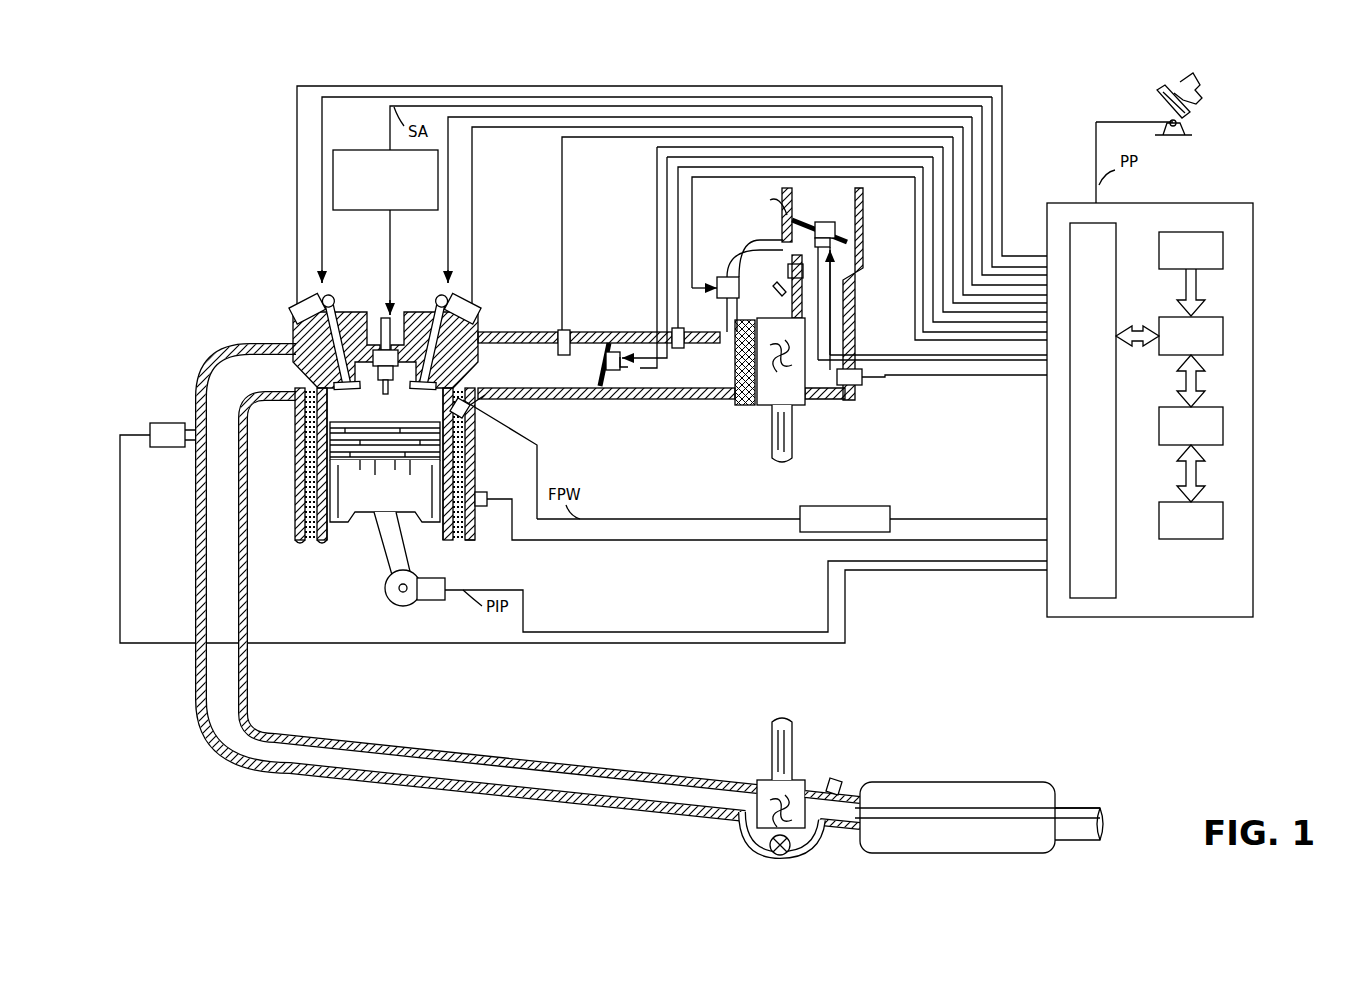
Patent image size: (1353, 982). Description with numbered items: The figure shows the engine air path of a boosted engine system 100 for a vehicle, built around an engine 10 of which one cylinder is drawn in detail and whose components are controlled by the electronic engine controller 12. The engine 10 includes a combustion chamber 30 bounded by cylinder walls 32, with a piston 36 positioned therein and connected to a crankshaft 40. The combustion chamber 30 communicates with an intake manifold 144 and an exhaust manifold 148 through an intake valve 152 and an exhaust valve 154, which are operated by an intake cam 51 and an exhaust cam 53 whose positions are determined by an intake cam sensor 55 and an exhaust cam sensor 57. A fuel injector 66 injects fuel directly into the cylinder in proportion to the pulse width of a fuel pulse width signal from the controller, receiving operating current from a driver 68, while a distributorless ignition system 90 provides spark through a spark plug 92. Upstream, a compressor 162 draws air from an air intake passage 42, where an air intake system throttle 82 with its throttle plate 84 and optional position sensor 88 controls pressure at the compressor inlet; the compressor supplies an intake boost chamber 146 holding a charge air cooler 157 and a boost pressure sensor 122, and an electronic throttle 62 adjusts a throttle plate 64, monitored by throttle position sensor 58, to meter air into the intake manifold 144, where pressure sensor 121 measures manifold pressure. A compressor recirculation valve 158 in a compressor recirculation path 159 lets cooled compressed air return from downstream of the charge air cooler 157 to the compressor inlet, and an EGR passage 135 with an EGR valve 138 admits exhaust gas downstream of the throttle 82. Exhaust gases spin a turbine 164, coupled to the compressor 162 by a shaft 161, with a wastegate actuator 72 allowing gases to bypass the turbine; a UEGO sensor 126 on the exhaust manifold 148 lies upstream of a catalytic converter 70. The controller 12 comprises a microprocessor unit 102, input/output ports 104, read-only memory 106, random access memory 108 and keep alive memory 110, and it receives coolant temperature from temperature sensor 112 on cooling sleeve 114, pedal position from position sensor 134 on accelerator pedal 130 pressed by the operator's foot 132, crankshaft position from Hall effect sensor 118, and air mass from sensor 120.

The engine system 100 is at (160, 118).
The engine 10 is at (594, 525).
The electronic engine controller 12 is at (1187, 395).
The combustion chamber 30 is at (383, 405).
The cylinder walls 32 is at (337, 528).
The piston 36 is at (367, 497).
The crankshaft 40 is at (393, 606).
The air intake passage 42 is at (789, 293).
The intake cam 51 is at (450, 317).
The exhaust cam 53 is at (308, 317).
The intake cam sensor 55 is at (460, 298).
The exhaust cam sensor 57 is at (312, 300).
The throttle position sensor 58 is at (625, 365).
The electronic throttle 62 is at (600, 348).
The throttle plate 64 is at (612, 352).
The fuel injector 66 is at (467, 412).
The driver 68 is at (890, 520).
The catalytic converter 70 is at (865, 845).
The wastegate actuator 72 is at (768, 848).
The air intake system throttle 82 is at (800, 236).
The throttle plate 84 is at (787, 212).
The position sensor 88 is at (815, 237).
The distributorless ignition system 90 is at (339, 150).
The spark plug 92 is at (390, 318).
The microprocessor unit 102 is at (1223, 340).
The input/output ports 104 is at (1116, 232).
The read-only memory 106 is at (1223, 250).
The random access memory 108 is at (1223, 427).
The keep alive memory 110 is at (1223, 522).
The temperature sensor 112 is at (481, 492).
The cooling sleeve 114 is at (472, 528).
The Hall effect sensor 118 is at (428, 600).
The air mass sensor 120 is at (852, 385).
The pressure sensor 121 is at (560, 332).
The pressure sensor 122 is at (684, 330).
The Universal Exhaust Gas Oxygen sensor 126 is at (150, 428).
The accelerator pedal 130 is at (1197, 112).
The foot 132 is at (1200, 92).
The position sensor 134 is at (1180, 123).
The EGR passage 135 is at (782, 296).
The EGR valve 138 is at (788, 270).
The intake manifold 144 is at (606, 365).
The intake boost chamber 146 is at (690, 367).
The exhaust manifold 148 is at (479, 582).
The intake valve 152 is at (423, 385).
The exhaust valve 154 is at (347, 385).
The charge air cooler 157 is at (742, 405).
The compressor recirculation valve 158 is at (722, 277).
The compressor recirculation path 159 is at (788, 278).
The shaft 161 is at (772, 420).
The compressor 162 is at (798, 405).
The turbine 164 is at (762, 780).